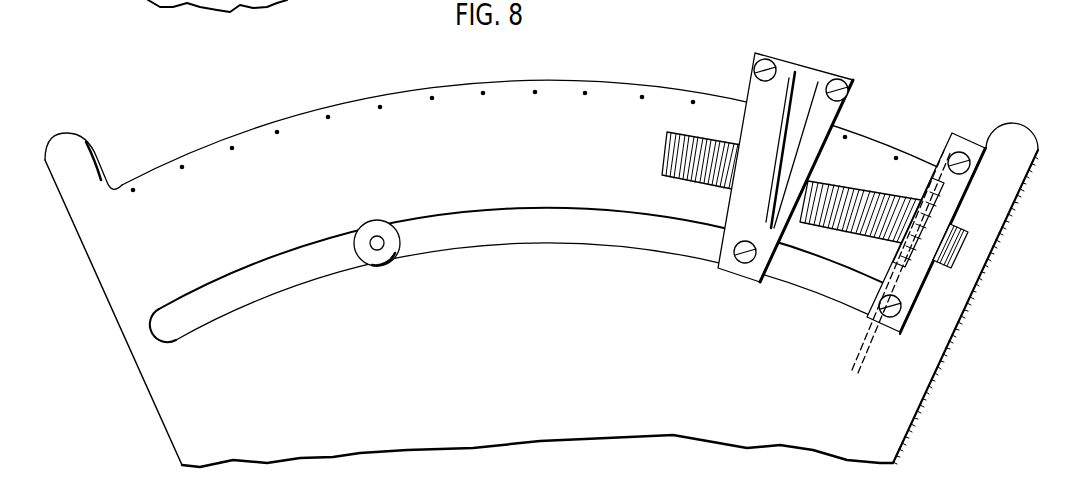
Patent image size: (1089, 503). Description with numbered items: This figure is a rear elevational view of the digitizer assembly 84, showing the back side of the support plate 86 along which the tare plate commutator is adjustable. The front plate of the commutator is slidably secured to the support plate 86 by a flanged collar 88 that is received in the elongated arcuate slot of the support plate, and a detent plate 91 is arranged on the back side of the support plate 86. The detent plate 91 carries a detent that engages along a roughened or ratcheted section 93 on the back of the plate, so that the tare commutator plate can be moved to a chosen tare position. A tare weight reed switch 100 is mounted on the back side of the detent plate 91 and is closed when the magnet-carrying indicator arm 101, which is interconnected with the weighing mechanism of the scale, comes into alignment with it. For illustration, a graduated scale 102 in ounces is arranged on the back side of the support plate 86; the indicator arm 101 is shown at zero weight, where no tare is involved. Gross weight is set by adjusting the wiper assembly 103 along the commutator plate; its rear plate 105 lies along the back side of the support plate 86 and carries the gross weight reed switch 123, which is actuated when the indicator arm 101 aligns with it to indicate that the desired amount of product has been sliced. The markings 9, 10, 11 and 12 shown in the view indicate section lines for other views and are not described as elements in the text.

The digitizer assembly 84 is at (1016, 211).
The support plate 86 is at (108, 280).
The flanged collar 88 is at (375, 260).
The detent plate 91 is at (938, 230).
The ratcheted section 93 is at (873, 217).
The tare weight reed switch 100 is at (940, 198).
The indicator arm 101 is at (862, 335).
The graduated scale 102 is at (127, 210).
The wiper assembly 103 is at (810, 65).
The rear plate 105 is at (822, 137).
The gross weight reed switch 123 is at (781, 177).
The section line 9- 9 is at (352, 97).
The section line 10- 10 is at (845, 60).
The section line 11- 11 is at (773, 45).
The section line 12- 12 is at (993, 90).